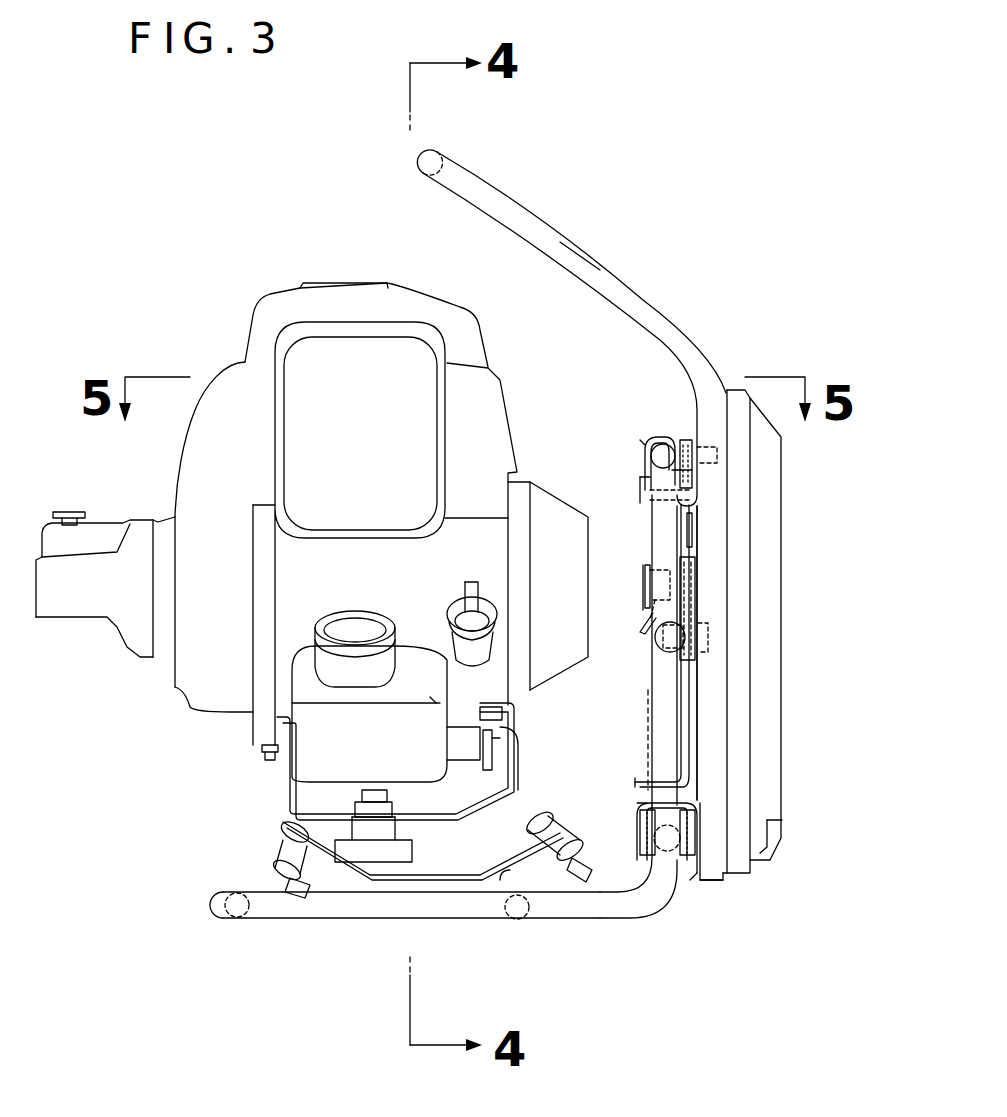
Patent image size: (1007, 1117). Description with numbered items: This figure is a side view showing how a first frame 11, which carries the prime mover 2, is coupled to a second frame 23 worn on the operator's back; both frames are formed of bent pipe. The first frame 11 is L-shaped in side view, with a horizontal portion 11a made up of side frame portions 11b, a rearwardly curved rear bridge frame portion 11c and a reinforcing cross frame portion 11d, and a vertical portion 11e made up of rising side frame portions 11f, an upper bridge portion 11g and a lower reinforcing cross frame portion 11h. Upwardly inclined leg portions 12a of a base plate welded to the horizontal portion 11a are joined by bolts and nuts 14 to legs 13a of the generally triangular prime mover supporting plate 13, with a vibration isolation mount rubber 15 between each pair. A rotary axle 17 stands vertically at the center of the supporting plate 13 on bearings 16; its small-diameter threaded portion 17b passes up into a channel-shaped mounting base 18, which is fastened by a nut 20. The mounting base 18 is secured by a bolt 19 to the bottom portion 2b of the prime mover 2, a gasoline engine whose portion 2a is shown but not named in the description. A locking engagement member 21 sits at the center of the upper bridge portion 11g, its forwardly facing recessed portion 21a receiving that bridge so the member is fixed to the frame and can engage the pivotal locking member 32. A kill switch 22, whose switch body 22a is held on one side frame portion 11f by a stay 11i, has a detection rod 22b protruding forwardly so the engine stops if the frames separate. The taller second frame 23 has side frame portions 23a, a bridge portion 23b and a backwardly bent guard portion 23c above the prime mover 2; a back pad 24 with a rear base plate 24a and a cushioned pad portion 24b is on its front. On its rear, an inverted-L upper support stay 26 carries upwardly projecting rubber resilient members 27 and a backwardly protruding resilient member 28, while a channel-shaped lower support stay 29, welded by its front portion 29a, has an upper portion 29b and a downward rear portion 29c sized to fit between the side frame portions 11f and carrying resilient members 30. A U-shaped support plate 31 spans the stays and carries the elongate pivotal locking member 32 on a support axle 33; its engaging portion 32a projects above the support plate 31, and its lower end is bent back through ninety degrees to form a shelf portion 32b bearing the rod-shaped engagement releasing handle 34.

The prime mover 2 is at (250, 262).
The engine carburetor portion 2a is at (93, 597).
The bottom portion 2b is at (230, 712).
The first frame 11 is at (390, 920).
The horizontal portion 11a is at (457, 903).
The side frame portions 11b is at (337, 913).
The rear bridge frame portion 11c is at (222, 905).
The reinforcing cross frame portion 11d is at (530, 900).
The vertical portion 11e is at (645, 675).
The side frame portions 11f is at (692, 715).
The upper bridge portion 11g is at (648, 440).
The reinforcing cross frame portion 11h is at (738, 862).
The stay 11i is at (643, 575).
The leg portions 12a is at (265, 875).
The prime mover supporting plate 13 is at (423, 851).
The legs 13a is at (280, 833).
The bolts and nuts 14 is at (537, 833).
The vibration isolation mount rubber 15 is at (280, 860).
The bearings 16 is at (407, 855).
The rotary axle 17 is at (385, 827).
The threaded portion 17b is at (373, 790).
The mounting base 18 is at (500, 897).
The bolt 19 is at (263, 760).
The nut 20 is at (288, 792).
The locking engagement member 21 is at (658, 427).
The recessed portion 21a is at (645, 445).
The kill switch 22 is at (662, 573).
The switch body 22a is at (657, 593).
The detection rod 22b is at (695, 572).
The second frame 23 is at (667, 270).
The side frame portions 23a is at (713, 593).
The bridge portion 23b is at (440, 173).
The guard portion 23c is at (590, 243).
The back pad 24 is at (783, 672).
The base plate 24a is at (760, 883).
The pad portion 24b is at (767, 822).
The upper support stay 26 is at (695, 440).
The resilient members 27 is at (700, 463).
The resilient member 28 is at (683, 430).
The lower support stay 29 is at (760, 800).
The front portion 29a is at (745, 885).
The upper portion 29b is at (760, 780).
The rear portion 29c is at (633, 853).
The resilient members 30 is at (760, 853).
The support plate 31 is at (700, 645).
The pivotal locking member 32 is at (680, 530).
The engaging portion 32a is at (697, 527).
The shelf portion 32b is at (635, 777).
The support axle 33 is at (707, 630).
The engagement releasing handle 34 is at (648, 723).